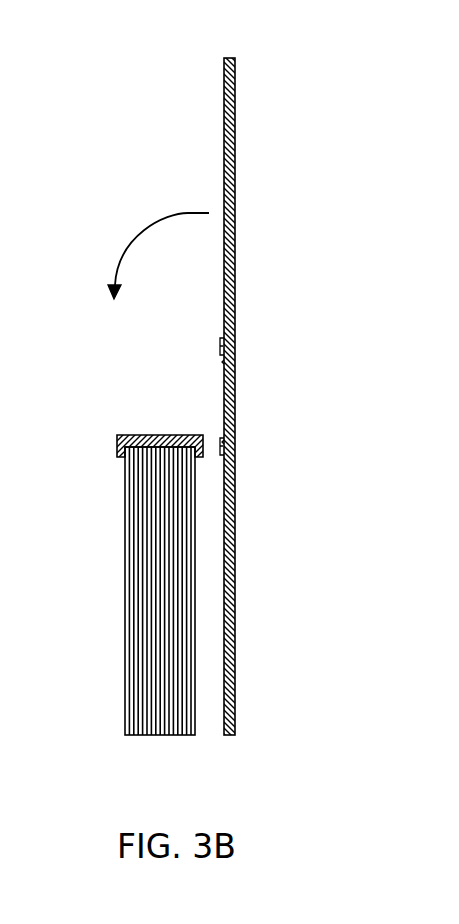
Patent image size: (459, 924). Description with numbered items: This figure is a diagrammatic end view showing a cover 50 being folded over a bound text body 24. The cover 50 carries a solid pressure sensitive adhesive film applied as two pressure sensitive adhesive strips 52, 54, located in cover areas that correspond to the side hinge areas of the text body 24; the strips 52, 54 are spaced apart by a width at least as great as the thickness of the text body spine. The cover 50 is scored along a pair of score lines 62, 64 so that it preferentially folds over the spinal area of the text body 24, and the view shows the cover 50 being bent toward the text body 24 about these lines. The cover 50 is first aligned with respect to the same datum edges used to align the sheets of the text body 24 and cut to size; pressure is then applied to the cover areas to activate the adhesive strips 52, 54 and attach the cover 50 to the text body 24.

The cover 50 is at (235, 247).
The pressure sensitive adhesive strip 52 is at (232, 350).
The pressure sensitive adhesive strip 54 is at (226, 451).
The score line 62 is at (225, 367).
The score line 64 is at (224, 440).
The text body 24 is at (125, 590).